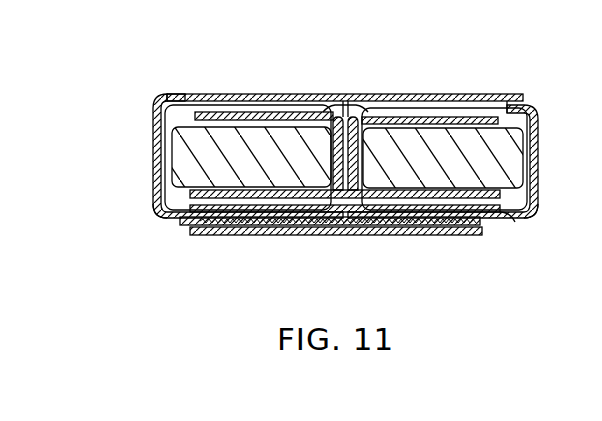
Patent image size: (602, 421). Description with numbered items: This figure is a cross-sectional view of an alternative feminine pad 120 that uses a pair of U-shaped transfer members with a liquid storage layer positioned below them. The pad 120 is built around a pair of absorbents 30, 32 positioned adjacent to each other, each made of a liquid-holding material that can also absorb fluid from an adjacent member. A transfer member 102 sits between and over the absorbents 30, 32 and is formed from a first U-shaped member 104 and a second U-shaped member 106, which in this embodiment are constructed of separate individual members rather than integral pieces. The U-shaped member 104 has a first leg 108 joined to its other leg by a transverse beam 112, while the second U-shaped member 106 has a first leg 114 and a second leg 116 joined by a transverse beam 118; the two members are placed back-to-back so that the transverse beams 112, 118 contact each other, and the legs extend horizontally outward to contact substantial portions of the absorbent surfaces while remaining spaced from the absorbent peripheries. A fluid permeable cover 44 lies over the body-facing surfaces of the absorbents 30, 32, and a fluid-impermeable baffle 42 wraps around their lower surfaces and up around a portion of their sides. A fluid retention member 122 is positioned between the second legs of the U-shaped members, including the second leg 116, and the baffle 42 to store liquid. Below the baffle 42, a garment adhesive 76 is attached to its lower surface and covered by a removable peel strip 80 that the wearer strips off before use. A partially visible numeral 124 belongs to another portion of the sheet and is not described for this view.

The feminine pad 120 is at (243, 58).
The first leg 108 is at (200, 93).
The U-shaped member 104 is at (316, 105).
The transfer member 102 is at (340, 100).
The fluid permeable cover 44 is at (353, 93).
The second U-shaped member 106 is at (423, 101).
The first leg 114 is at (490, 100).
The absorbent 30 is at (177, 175).
The absorbent 32 is at (500, 182).
The fluid-impermeable baffle 42 is at (162, 215).
The second leg 116 is at (530, 216).
The transverse beam 112 is at (335, 176).
The transverse beam 118 is at (358, 176).
The removable peel strip 80 is at (400, 237).
The garment adhesive 76 is at (437, 238).
The fluid retention member 122 is at (515, 227).
The element of next figure 124 is at (132, 416).